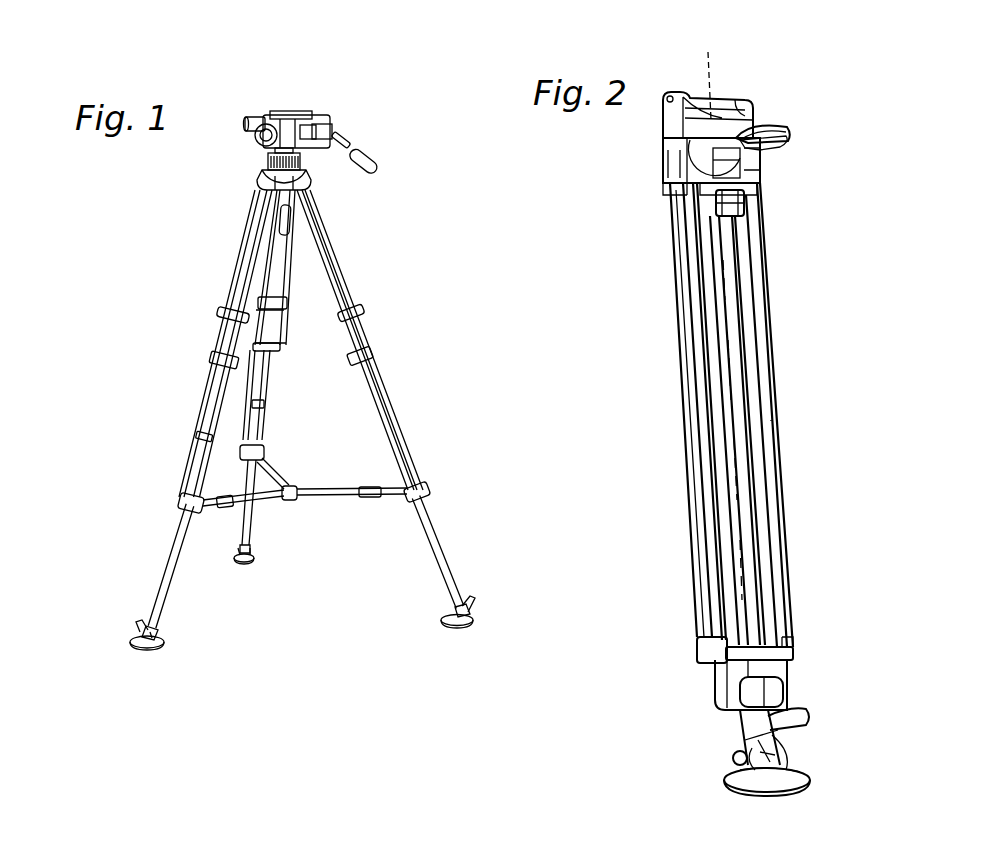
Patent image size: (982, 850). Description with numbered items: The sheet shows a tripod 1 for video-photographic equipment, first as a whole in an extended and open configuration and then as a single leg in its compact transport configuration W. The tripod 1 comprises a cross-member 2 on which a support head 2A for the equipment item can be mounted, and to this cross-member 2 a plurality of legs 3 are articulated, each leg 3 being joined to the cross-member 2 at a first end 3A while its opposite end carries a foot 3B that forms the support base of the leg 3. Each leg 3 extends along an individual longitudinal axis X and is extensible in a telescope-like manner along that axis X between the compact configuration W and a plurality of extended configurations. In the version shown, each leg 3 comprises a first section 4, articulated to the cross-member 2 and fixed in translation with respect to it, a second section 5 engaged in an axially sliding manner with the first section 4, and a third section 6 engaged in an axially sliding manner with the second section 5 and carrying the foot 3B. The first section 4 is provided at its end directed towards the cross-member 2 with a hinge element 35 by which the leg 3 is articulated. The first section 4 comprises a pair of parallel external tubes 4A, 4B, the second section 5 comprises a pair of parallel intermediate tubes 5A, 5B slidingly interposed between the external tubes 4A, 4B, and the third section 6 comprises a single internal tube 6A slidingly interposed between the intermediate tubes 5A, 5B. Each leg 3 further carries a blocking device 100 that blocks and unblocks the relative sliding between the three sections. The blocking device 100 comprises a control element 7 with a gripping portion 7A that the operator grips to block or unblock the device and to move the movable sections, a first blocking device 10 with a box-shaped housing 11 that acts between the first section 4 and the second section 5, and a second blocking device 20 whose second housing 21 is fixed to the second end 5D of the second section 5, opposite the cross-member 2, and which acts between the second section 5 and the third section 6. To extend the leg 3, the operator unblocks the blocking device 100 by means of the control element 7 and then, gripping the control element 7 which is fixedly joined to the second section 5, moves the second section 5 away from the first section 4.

In FIG. 1, the tripod 1 is at (134, 236).
In FIG. 1, the cross-member 2 is at (263, 178).
In FIG. 1, the support head 2A is at (301, 109).
In FIG. 1, the leg 3 is at (383, 372).
In FIG. 2, the leg 3 is at (853, 138).
In FIG. 1, the first end 3A is at (258, 185).
In FIG. 1, the foot 3B is at (258, 557).
In FIG. 2, the foot 3B is at (796, 772).
In FIG. 1, the first section 4 is at (233, 262).
In FIG. 2, the external tube 4A is at (678, 250).
In FIG. 2, the external tube 4B is at (767, 247).
In FIG. 1, the second section 5 is at (201, 390).
In FIG. 2, the second section 5 is at (698, 196).
In FIG. 2, the intermediate tube 5A is at (712, 290).
In FIG. 2, the intermediate tube 5B is at (743, 286).
In FIG. 2, the second end of second section 5D is at (718, 641).
In FIG. 1, the third section 6 is at (166, 548).
In FIG. 2, the third section 6 is at (734, 330).
In FIG. 1, the internal tube 6A is at (168, 565).
In FIG. 2, the internal tube 6A is at (723, 728).
In FIG. 2, the control element 7 is at (781, 150).
In FIG. 2, the gripping portion 7A is at (762, 128).
In FIG. 1, the first blocking device 10 is at (223, 316).
In FIG. 2, the first blocking device 10 is at (769, 164).
In FIG. 2, the housing 11 is at (683, 163).
In FIG. 1, the second blocking device 20 is at (176, 498).
In FIG. 2, the second blocking device 20 is at (775, 686).
In FIG. 2, the second housing 21 is at (718, 701).
In FIG. 2, the hinge element 35 is at (783, 88).
In FIG. 1, the blocking device 100 is at (127, 393).
In FIG. 2, the blocking device 100 is at (677, 88).
In FIG. 2, the compact transport configuration W is at (825, 413).
In FIG. 2, the longitudinal axis X is at (707, 45).